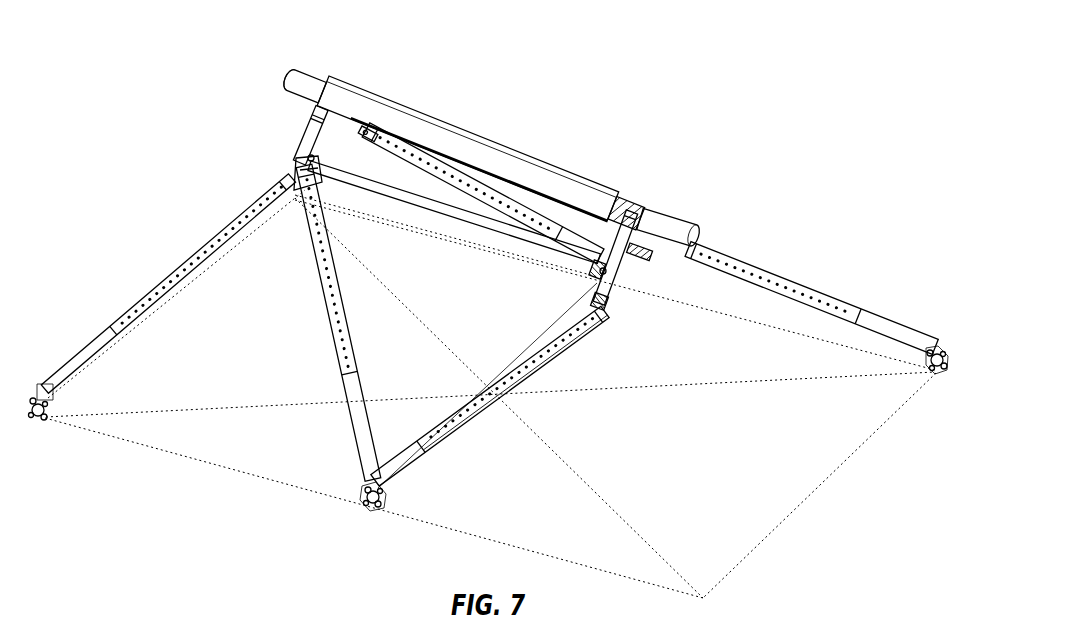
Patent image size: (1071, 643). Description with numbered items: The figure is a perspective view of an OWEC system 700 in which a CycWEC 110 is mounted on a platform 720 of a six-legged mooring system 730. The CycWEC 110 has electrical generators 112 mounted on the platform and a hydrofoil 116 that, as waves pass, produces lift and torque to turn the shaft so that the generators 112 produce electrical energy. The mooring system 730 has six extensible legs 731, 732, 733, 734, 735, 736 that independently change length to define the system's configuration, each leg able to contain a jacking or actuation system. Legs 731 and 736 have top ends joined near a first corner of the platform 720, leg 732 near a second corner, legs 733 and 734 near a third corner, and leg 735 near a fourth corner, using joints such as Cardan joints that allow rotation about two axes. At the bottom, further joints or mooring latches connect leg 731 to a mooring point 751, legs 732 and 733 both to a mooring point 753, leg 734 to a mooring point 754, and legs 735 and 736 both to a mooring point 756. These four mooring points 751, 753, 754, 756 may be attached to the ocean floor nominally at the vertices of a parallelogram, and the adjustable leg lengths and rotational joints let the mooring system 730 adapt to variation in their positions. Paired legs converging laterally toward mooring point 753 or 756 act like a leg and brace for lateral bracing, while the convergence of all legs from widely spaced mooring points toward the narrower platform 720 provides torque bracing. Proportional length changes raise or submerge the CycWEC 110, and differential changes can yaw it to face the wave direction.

The OWEC system 700 is at (684, 81).
The CycWEC 110 is at (515, 119).
The electrical generator 112 is at (306, 76).
The hydrofoil 116 is at (545, 158).
The platform 720 is at (606, 290).
The mooring system 730 is at (192, 195).
The extensible leg 731 is at (814, 290).
The extensible leg 732 is at (533, 369).
The extensible leg 733 is at (341, 293).
The extensible leg 734 is at (193, 268).
The extensible leg 735 is at (408, 150).
The extensible leg 736 is at (645, 251).
The mooring point 751 is at (932, 373).
The mooring point 753 is at (372, 512).
The mooring point 754 is at (42, 422).
The mooring point 756 is at (597, 279).